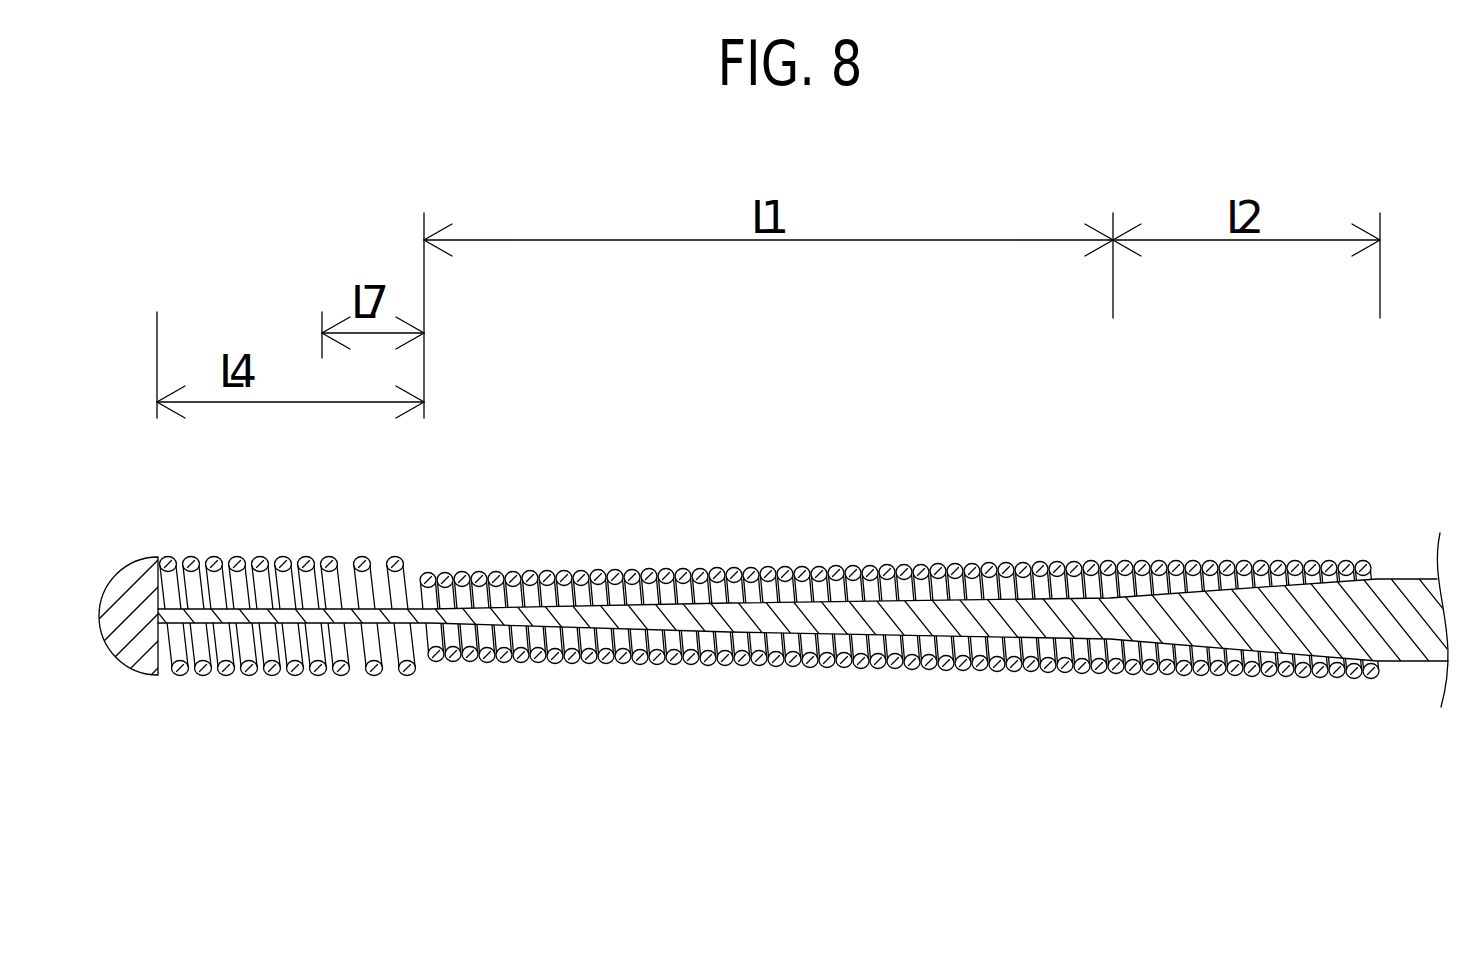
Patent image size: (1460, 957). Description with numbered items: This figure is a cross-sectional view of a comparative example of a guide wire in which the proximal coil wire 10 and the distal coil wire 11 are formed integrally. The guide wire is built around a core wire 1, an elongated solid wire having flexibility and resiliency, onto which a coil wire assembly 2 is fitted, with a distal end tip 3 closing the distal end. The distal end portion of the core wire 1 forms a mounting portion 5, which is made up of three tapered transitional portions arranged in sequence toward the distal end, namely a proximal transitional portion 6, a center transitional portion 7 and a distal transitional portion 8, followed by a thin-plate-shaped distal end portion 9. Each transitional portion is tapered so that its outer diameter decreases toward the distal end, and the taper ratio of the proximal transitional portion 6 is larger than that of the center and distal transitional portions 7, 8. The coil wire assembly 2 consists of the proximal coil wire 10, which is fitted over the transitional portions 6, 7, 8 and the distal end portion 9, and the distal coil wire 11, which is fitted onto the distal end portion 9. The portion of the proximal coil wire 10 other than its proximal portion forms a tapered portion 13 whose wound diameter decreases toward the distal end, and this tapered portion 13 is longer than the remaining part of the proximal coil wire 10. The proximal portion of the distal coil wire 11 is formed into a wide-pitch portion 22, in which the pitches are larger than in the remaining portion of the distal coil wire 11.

The core wire 1 is at (1388, 567).
The coil wire assembly 2 is at (897, 550).
The distal end tip 3 is at (130, 570).
The mounting portion 5 is at (890, 635).
The proximal transitional portion 6 is at (1320, 628).
The center transitional portion 7 is at (1087, 630).
The distal transitional portion 8 is at (732, 620).
The distal end portion 9 is at (305, 613).
The proximal coil wire 10 is at (1059, 547).
The distal coil wire 11 is at (220, 550).
The tapered portion 13 is at (598, 577).
The wide-pitch portion 22 is at (361, 557).